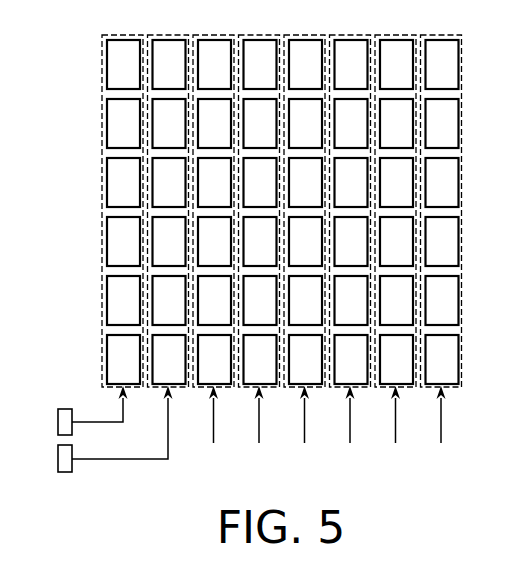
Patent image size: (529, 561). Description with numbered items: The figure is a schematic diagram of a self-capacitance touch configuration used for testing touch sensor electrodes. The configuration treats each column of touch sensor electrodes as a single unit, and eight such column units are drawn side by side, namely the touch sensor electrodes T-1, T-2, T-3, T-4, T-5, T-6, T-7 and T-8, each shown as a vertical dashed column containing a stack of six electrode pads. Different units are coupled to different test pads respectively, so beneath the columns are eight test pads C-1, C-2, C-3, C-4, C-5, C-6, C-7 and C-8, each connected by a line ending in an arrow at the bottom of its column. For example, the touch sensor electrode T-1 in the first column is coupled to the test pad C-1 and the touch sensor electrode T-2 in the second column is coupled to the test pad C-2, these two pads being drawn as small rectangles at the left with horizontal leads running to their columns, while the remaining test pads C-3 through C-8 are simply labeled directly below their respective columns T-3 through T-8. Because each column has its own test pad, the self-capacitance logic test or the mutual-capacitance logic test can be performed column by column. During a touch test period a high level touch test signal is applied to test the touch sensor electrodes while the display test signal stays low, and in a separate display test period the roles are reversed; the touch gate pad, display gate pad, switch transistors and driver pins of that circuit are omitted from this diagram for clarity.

The touch sensor electrode T-1 is at (122, 196).
The touch sensor electrode T-2 is at (168, 196).
The touch sensor electrode T-3 is at (213, 196).
The touch sensor electrode T-4 is at (259, 196).
The touch sensor electrode T-5 is at (304, 196).
The touch sensor electrode T-6 is at (350, 196).
The touch sensor electrode T-7 is at (395, 196).
The touch sensor electrode T-8 is at (441, 196).
The test pad C-1 is at (72, 411).
The test pad C-2 is at (95, 429).
The test pad C-3 is at (213, 430).
The test pad C-4 is at (259, 430).
The test pad C-5 is at (304, 430).
The test pad C-6 is at (350, 430).
The test pad C-7 is at (395, 430).
The test pad C-8 is at (441, 430).